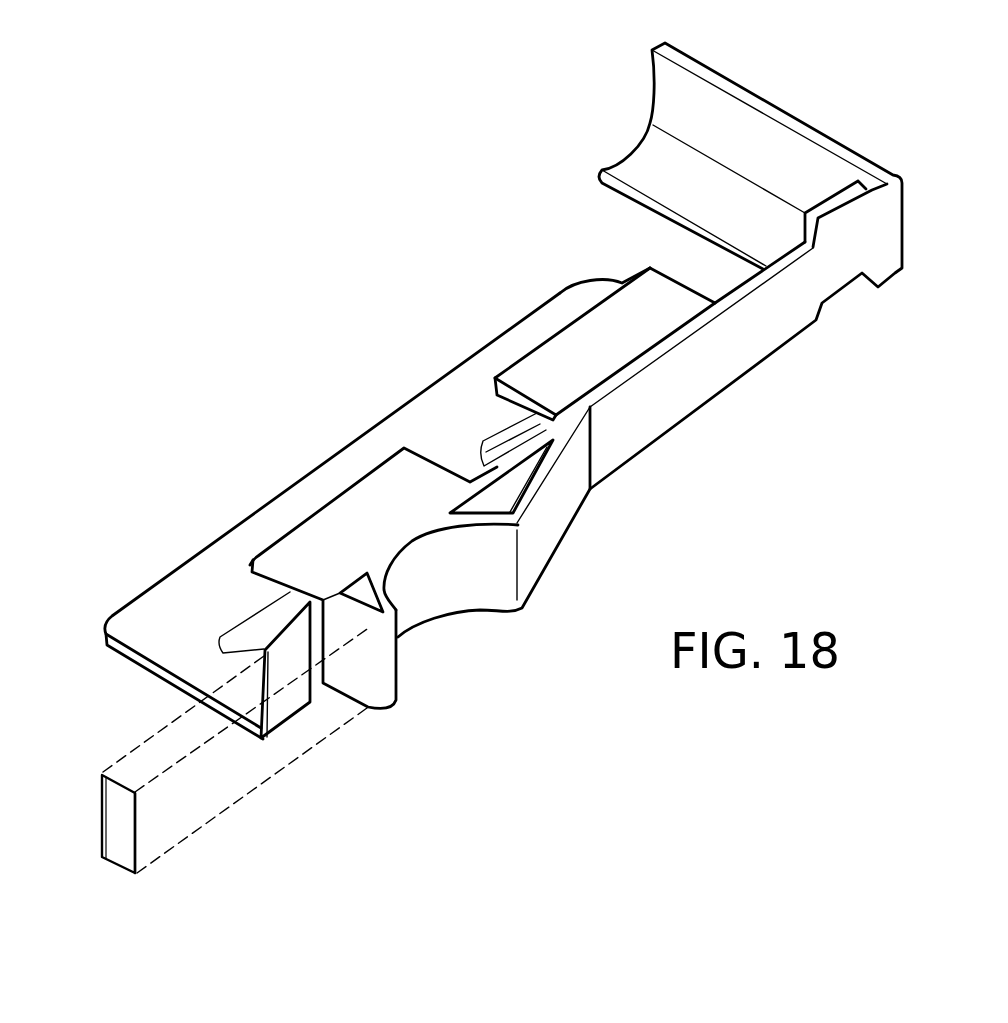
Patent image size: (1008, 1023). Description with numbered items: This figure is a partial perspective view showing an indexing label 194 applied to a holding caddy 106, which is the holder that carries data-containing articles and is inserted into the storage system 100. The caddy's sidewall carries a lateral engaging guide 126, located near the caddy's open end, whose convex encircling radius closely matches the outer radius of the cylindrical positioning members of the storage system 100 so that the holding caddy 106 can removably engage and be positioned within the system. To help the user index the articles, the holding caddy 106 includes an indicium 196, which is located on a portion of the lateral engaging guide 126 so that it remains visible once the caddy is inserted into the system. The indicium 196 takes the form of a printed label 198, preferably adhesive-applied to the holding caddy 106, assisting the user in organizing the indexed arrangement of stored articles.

The storage system 100 is at (375, 277).
The holding caddy 106 is at (200, 548).
The lateral engaging guide 126 is at (377, 705).
The indexing label 194 is at (113, 863).
The indicium 196 is at (135, 830).
The printed label 198 is at (102, 812).